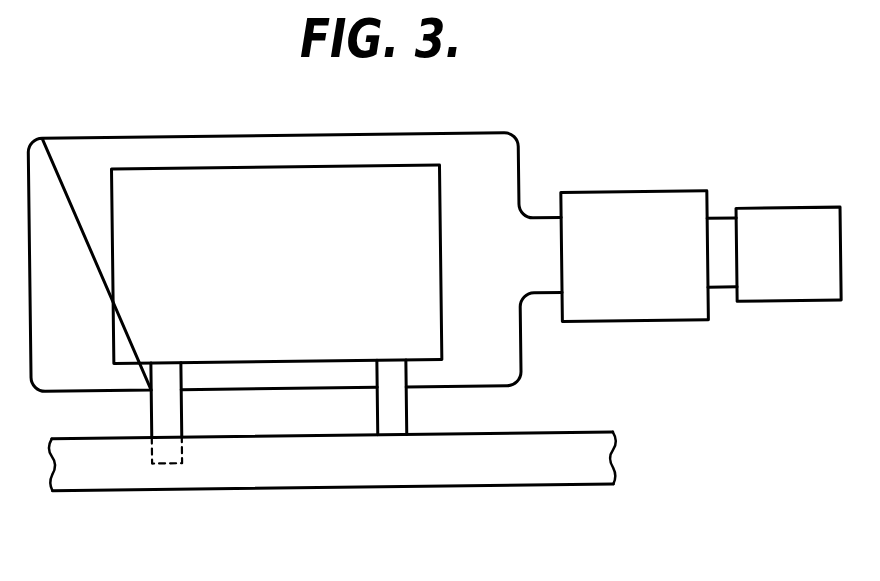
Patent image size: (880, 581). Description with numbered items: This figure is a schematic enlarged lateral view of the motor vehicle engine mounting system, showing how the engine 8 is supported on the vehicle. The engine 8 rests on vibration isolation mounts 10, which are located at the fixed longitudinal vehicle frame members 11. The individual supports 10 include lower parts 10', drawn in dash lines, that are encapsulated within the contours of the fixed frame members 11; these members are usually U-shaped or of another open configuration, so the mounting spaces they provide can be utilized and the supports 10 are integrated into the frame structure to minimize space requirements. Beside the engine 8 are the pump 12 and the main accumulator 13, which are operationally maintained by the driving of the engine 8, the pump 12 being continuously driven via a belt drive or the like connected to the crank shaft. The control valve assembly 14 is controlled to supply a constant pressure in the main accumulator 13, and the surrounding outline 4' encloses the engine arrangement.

The housing / enclosure body 4' is at (297, 245).
The engine 8 is at (286, 279).
The vibration isolation mounts 10 is at (307, 398).
The lower parts 10' is at (180, 498).
The longitudinal vehicle frame members 11 is at (512, 476).
The pump 12 is at (808, 210).
The main accumulator 13 is at (668, 192).
The control valve assembly 14 is at (722, 216).